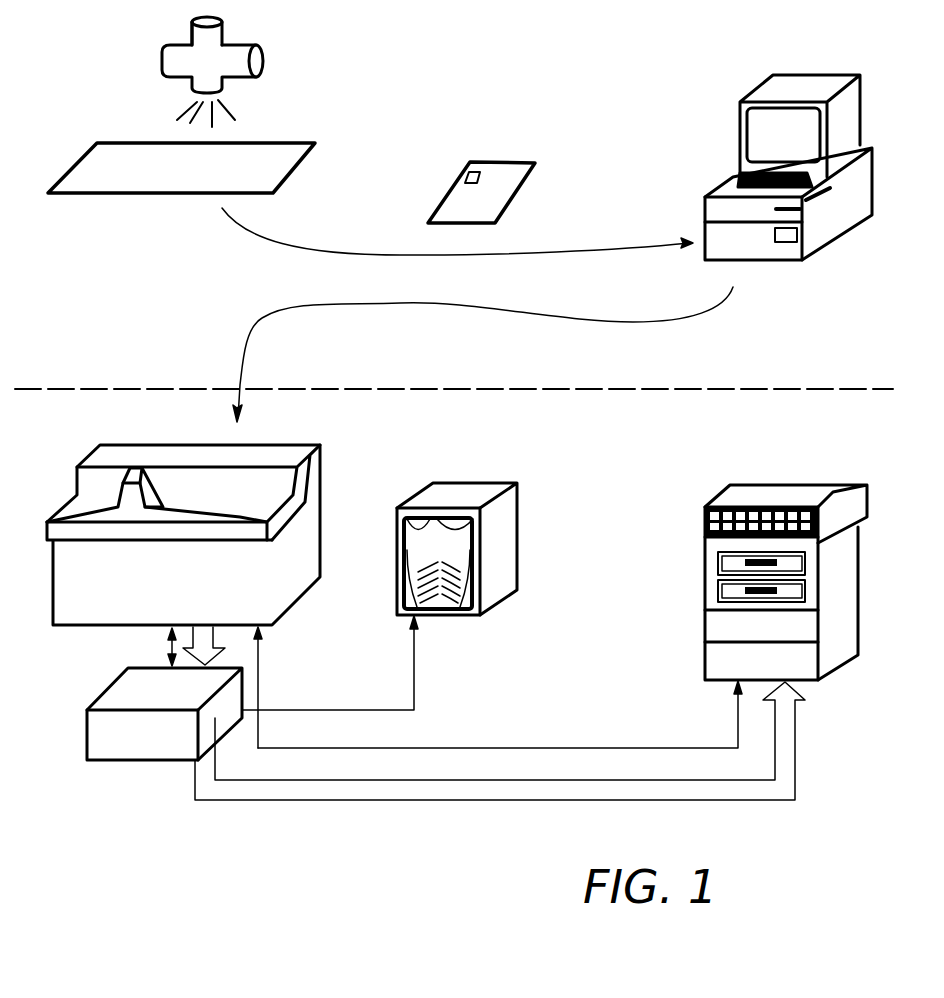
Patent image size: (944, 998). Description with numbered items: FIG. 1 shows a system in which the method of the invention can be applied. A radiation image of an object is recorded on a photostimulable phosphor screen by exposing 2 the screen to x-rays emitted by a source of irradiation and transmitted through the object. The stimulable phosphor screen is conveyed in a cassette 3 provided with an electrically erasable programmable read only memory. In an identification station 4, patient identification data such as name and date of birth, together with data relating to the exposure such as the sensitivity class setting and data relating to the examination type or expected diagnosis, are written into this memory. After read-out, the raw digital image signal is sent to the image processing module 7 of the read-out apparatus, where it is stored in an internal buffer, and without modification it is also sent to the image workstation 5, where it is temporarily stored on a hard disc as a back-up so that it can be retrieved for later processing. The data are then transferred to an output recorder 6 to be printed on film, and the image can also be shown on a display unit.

The exposing 2 is at (240, 62).
The photostimulable phosphor screen in cassette 3 is at (495, 187).
The identification station 4 is at (837, 218).
The image workstation 5 is at (465, 498).
The printer 6 is at (837, 650).
The image processing module 7 is at (225, 705).